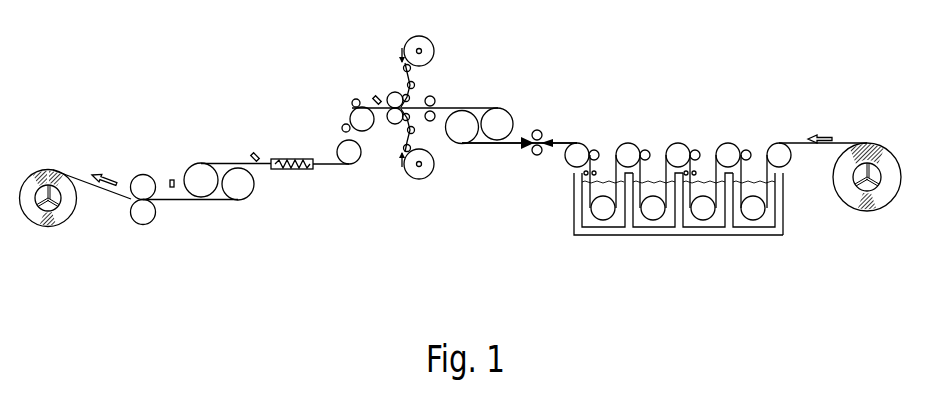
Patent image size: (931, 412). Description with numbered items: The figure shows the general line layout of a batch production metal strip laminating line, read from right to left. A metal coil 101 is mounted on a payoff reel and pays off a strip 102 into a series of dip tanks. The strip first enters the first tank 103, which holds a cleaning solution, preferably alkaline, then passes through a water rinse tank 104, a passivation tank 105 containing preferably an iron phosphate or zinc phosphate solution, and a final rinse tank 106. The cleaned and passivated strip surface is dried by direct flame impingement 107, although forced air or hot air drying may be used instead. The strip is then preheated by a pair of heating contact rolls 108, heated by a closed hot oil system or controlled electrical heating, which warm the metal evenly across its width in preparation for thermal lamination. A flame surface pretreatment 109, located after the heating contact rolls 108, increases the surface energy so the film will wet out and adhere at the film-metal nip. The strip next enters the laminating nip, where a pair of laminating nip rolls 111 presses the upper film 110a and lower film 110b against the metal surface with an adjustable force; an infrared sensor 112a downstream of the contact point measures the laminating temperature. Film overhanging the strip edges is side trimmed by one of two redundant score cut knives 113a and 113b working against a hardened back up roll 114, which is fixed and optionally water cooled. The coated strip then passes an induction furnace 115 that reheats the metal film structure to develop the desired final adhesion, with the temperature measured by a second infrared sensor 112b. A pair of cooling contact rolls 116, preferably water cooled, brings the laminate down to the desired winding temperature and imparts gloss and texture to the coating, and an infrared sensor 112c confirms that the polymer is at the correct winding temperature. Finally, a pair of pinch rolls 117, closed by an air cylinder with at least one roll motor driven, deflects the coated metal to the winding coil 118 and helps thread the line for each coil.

The metal coil 101 is at (834, 177).
The strip 102 is at (797, 143).
The first tank 103 is at (760, 222).
The water rinse tank 104 is at (705, 222).
The passivation tank 105 is at (668, 220).
The final rinse tank 106 is at (619, 222).
The direct flame impingement 107 is at (539, 130).
The heating contact rolls 108 is at (511, 118).
The flame surface pretreatment 109 is at (435, 98).
The upper film 110a is at (430, 41).
The lower film 110b is at (429, 173).
The laminating nip rolls 111 is at (397, 92).
The infrared sensor 112a is at (377, 95).
The second infrared sensor 112b is at (255, 152).
The infrared sensor 112c is at (172, 179).
The score cut knife 113a is at (354, 100).
The score cut knife 113b is at (343, 126).
The hardened back up roll 114 is at (371, 127).
The induction furnace 115 is at (300, 159).
The cooling contact rolls 116 is at (254, 187).
The pinch rolls 117 is at (143, 175).
The winding coil 118 is at (42, 170).